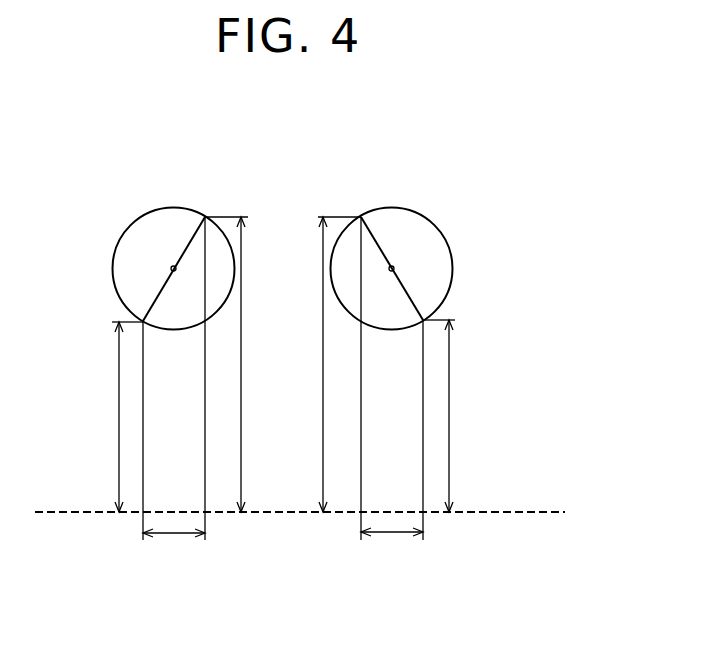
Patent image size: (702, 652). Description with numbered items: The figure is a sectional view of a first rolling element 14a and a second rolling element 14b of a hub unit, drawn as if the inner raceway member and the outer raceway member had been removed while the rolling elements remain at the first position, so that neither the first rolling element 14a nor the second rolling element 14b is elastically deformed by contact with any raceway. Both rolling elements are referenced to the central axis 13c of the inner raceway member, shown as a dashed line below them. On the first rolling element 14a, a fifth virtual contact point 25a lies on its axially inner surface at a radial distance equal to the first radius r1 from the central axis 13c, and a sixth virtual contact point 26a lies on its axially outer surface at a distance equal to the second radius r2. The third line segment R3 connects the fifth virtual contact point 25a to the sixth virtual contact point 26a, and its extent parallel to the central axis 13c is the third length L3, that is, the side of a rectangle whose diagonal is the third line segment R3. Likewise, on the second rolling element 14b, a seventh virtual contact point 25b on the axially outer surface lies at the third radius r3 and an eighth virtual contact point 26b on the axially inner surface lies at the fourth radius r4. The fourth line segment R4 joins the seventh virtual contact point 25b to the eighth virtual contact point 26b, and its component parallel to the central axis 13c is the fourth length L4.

The first rolling element 14a is at (422, 238).
The second rolling element 14b is at (145, 240).
The sixth virtual contact point 26a is at (361, 217).
The eighth virtual contact point 26b is at (205, 217).
The fifth virtual contact point 25a is at (433, 313).
The seventh virtual contact point 25b is at (143, 322).
The third line segment R3 is at (407, 288).
The fourth line segment R4 is at (158, 297).
The first radius r1 is at (449, 413).
The second radius r2 is at (323, 378).
The third radius r3 is at (119, 418).
The fourth radius r4 is at (241, 432).
The third length L3 is at (393, 540).
The fourth length L4 is at (175, 540).
The central axis 13c is at (528, 508).